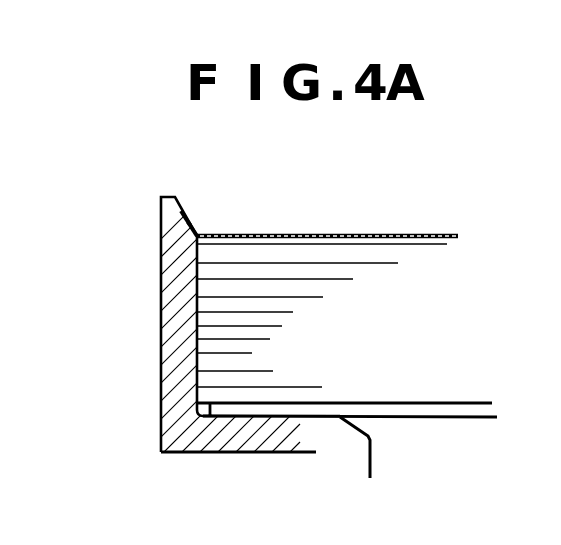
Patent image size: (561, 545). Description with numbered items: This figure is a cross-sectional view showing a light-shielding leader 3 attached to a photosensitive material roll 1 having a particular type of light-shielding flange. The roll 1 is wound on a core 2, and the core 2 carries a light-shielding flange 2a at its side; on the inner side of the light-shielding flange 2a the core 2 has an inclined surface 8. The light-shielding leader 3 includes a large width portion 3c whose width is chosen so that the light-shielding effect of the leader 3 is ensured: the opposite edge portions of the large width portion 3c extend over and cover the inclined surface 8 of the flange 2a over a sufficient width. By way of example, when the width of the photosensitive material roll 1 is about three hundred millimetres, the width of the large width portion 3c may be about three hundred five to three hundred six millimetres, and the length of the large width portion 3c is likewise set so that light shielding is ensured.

The photosensitive material roll 1 is at (448, 347).
The core 2 is at (127, 451).
The light-shielding flange 2a is at (161, 308).
The light-shielding leader 3 is at (400, 232).
The large width portion 3c is at (187, 219).
The inclined surface 8 is at (184, 211).